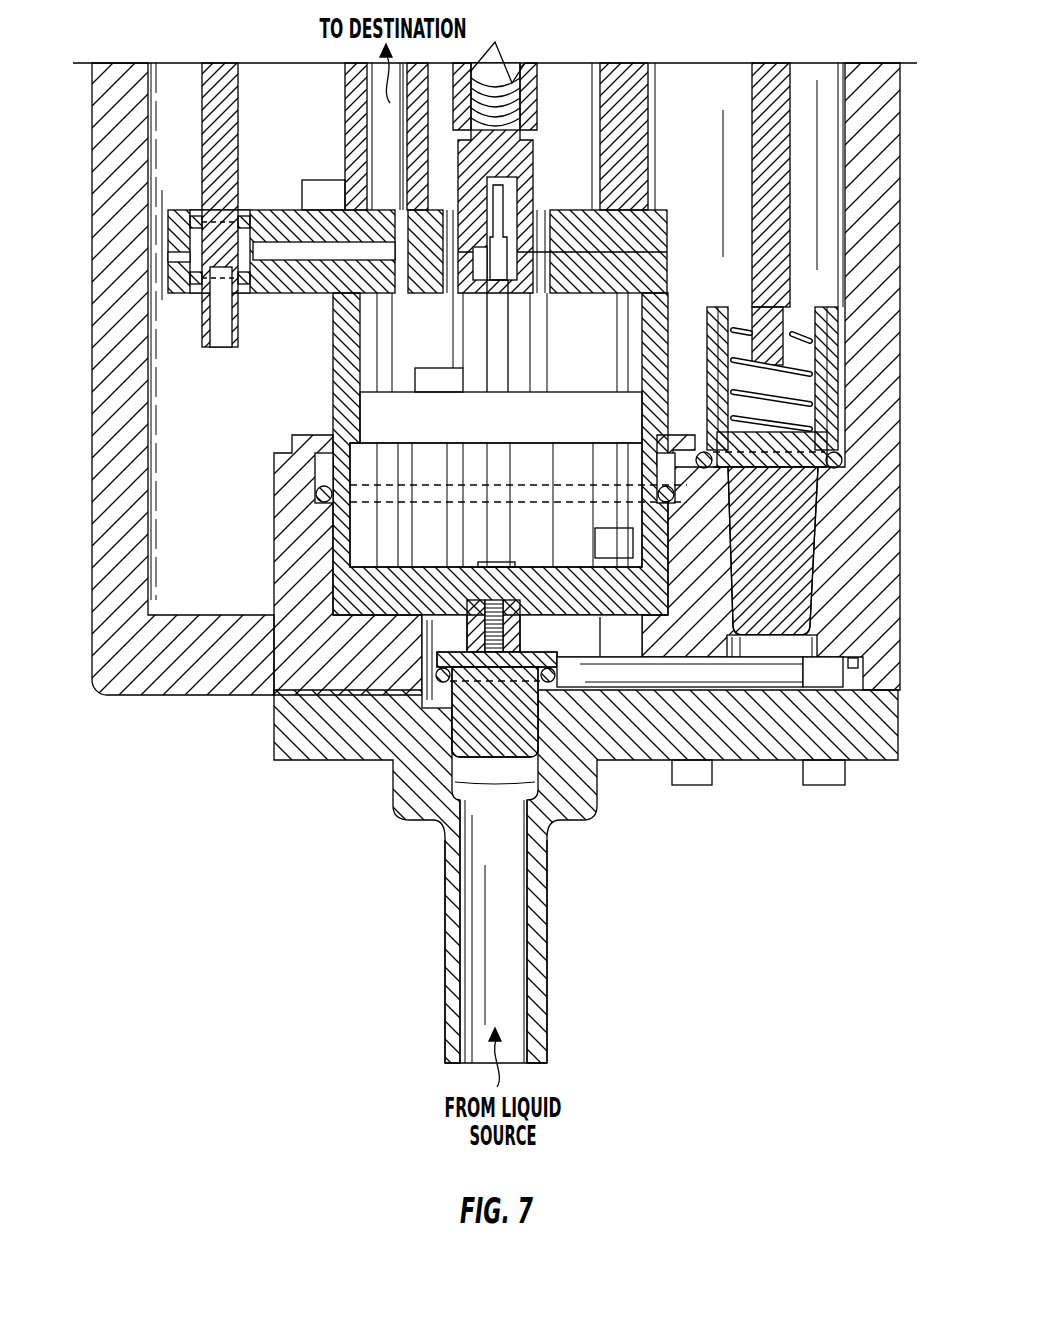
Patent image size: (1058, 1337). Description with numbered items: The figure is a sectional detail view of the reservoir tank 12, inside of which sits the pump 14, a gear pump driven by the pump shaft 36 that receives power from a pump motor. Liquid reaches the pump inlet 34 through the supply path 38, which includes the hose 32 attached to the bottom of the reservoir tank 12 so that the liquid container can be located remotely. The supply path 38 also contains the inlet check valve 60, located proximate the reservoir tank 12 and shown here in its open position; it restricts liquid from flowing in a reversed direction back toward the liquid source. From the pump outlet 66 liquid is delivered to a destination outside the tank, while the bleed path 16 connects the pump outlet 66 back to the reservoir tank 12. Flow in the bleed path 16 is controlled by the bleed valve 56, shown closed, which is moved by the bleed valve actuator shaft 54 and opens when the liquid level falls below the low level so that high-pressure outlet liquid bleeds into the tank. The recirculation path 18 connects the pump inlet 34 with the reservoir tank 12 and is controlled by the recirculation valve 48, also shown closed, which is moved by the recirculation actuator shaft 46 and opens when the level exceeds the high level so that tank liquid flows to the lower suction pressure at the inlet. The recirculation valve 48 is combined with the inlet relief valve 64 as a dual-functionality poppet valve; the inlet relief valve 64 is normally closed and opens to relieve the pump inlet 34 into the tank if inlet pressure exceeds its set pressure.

The reservoir tank 12 is at (92, 135).
The pump 14 is at (423, 528).
The bleed path 16 is at (262, 247).
The recirculation path 18 is at (620, 672).
The hose 32 is at (445, 978).
The pump inlet 34 is at (452, 632).
The pump shaft 36 is at (498, 68).
The supply path 38 is at (484, 903).
The recirculation actuator shaft 46 is at (777, 138).
The recirculation valve 48 is at (778, 520).
The bleed valve actuator shaft 54 is at (218, 77).
The bleed valve 56 is at (170, 285).
The inlet check valve 60 is at (510, 722).
The inlet relief valve 64 is at (812, 388).
The pump outlet 66 is at (381, 292).